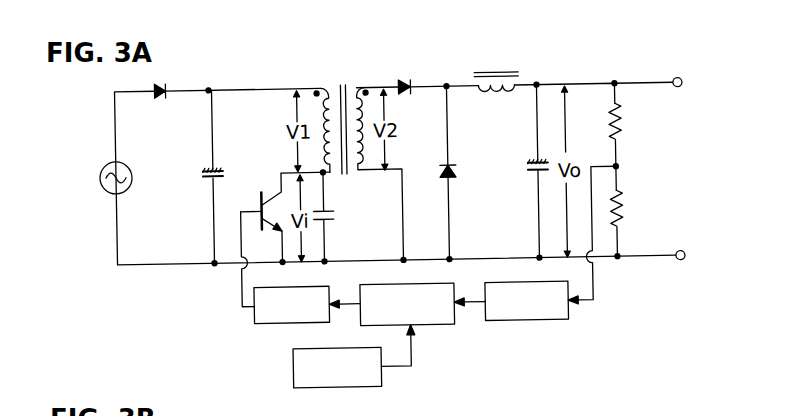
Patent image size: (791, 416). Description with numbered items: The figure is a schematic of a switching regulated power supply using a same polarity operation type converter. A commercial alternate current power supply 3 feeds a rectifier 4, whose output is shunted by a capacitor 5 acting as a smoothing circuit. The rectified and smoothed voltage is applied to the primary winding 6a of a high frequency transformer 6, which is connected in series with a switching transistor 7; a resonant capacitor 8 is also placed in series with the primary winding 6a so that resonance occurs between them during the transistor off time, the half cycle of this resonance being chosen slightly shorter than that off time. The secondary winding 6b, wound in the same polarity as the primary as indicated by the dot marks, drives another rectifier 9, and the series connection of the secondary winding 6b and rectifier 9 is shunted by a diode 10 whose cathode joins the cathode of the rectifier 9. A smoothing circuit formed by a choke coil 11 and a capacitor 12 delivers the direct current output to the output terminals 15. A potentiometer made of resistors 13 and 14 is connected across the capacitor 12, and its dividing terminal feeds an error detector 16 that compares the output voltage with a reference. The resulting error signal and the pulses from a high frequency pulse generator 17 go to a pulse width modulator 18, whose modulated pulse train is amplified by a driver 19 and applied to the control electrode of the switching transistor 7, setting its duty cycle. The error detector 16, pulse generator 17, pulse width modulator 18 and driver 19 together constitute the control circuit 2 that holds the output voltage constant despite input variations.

The control circuit 2 is at (452, 336).
The commercial alternate current power supply 3 is at (101, 187).
The rectifier 4 is at (163, 96).
The capacitor 5 is at (208, 183).
The high frequency transformer 6 is at (340, 70).
The primary winding 6a is at (330, 86).
The secondary winding 6b is at (358, 86).
The switching transistor 7 is at (261, 192).
The resonant capacitor 8 is at (335, 211).
The rectifier 9 is at (409, 95).
The diode 10 is at (458, 172).
The choke coil 11 is at (499, 97).
The capacitor 12 is at (535, 176).
The resistor 13 is at (623, 122).
The resistor 14 is at (623, 205).
The output terminals 15 is at (687, 227).
The error detector 16 is at (532, 323).
The high frequency pulse generator 17 is at (335, 387).
The pulse width modulator 18 is at (428, 326).
The driver 19 is at (262, 322).